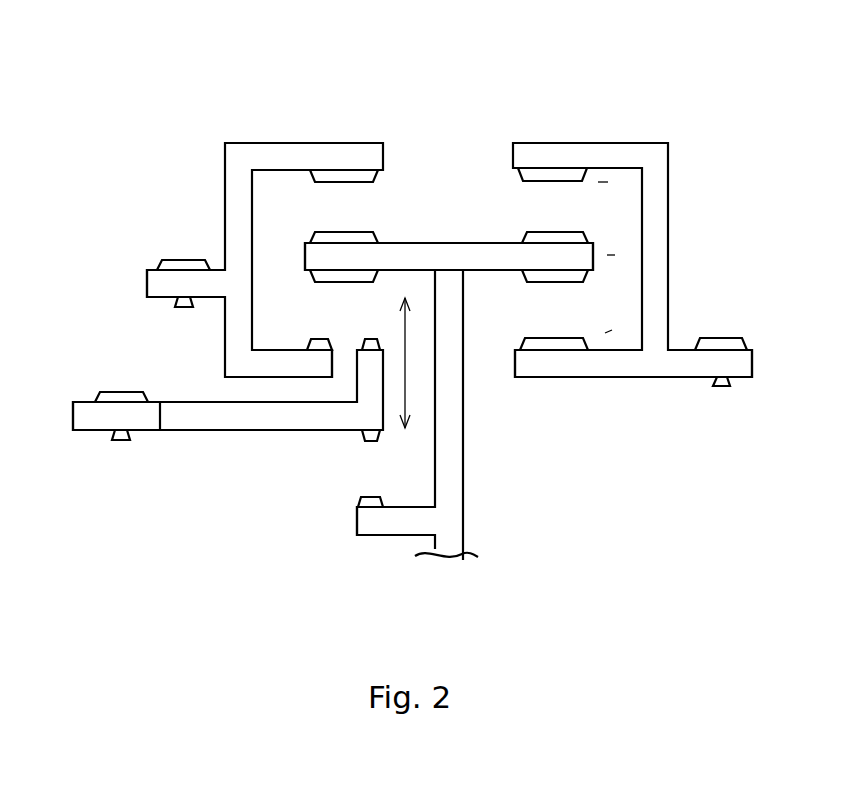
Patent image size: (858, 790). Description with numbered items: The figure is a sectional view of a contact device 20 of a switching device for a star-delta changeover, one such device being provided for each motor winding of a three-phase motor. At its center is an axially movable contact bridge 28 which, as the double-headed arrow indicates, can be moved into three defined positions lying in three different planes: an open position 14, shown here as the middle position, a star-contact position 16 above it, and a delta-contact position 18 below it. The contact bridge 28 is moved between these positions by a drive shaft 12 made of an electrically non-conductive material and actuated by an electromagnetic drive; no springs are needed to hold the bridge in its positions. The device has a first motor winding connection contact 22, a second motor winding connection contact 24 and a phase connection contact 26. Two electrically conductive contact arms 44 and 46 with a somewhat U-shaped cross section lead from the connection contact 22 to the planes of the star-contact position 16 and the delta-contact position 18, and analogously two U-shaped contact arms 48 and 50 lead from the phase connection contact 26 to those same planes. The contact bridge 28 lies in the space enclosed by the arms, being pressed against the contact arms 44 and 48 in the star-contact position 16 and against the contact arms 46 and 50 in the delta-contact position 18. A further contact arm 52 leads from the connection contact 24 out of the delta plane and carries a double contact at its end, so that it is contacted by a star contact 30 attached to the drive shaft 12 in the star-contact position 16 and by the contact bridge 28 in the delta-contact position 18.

The drive shaft 12 is at (455, 477).
The open position 14 is at (606, 255).
The star-contact position 16 is at (597, 182).
The delta-contact position 18 is at (603, 334).
The contact device 20 is at (143, 84).
The first motor winding connection contact 22 is at (182, 262).
The second motor winding connection contact 24 is at (120, 394).
The phase connection contact 26 is at (722, 342).
The contact bridge 28 is at (419, 253).
The star contact 30 is at (372, 500).
The contact arm 44 is at (259, 153).
The contact arm 46 is at (240, 357).
The contact arm 48 is at (597, 150).
The contact arm 50 is at (578, 367).
The contact arm 52 is at (225, 418).